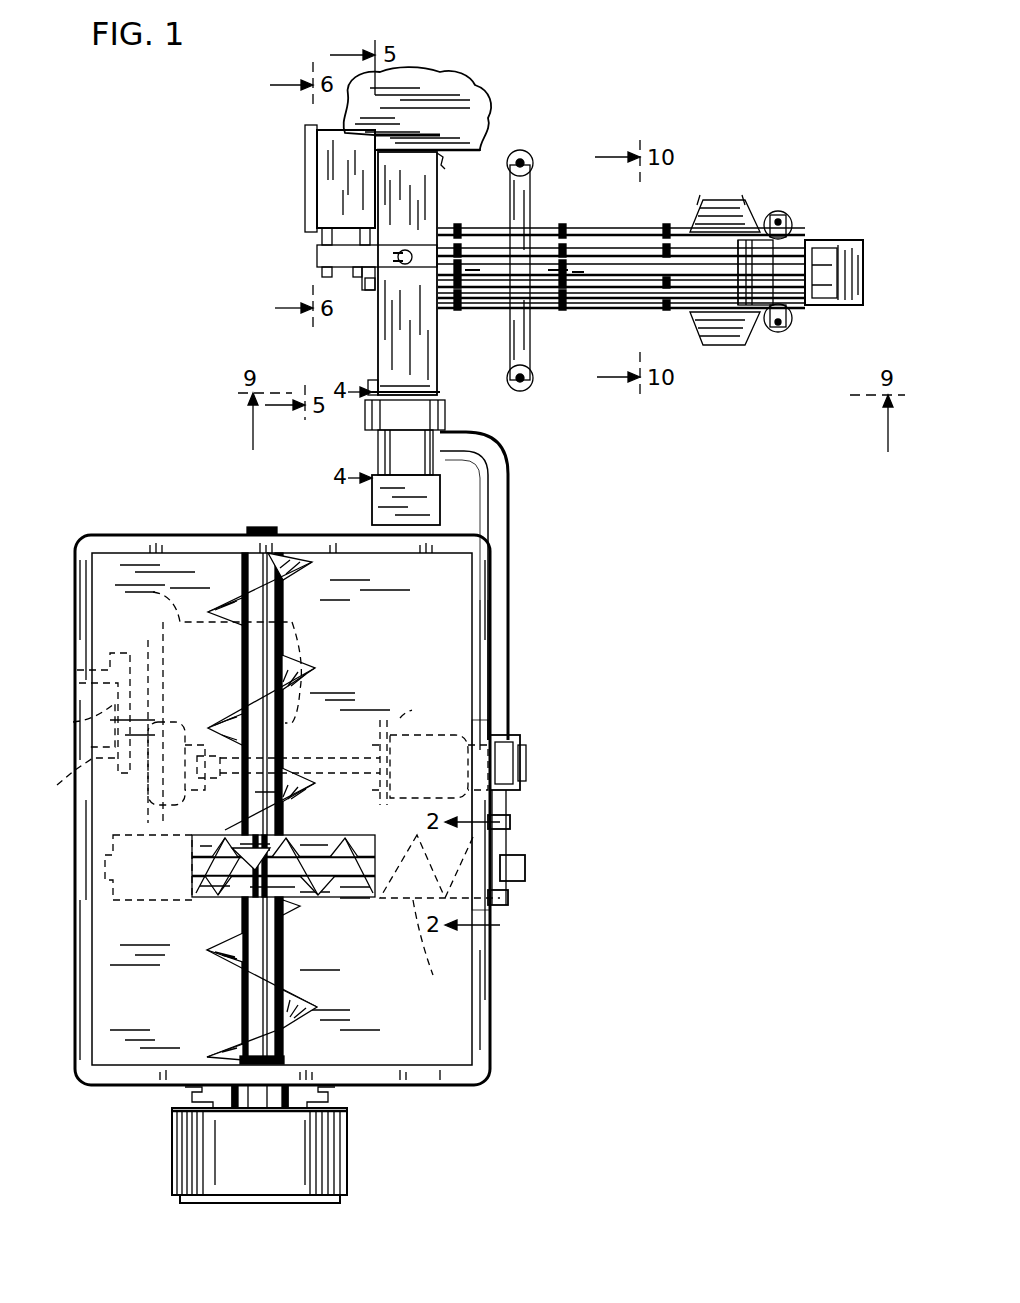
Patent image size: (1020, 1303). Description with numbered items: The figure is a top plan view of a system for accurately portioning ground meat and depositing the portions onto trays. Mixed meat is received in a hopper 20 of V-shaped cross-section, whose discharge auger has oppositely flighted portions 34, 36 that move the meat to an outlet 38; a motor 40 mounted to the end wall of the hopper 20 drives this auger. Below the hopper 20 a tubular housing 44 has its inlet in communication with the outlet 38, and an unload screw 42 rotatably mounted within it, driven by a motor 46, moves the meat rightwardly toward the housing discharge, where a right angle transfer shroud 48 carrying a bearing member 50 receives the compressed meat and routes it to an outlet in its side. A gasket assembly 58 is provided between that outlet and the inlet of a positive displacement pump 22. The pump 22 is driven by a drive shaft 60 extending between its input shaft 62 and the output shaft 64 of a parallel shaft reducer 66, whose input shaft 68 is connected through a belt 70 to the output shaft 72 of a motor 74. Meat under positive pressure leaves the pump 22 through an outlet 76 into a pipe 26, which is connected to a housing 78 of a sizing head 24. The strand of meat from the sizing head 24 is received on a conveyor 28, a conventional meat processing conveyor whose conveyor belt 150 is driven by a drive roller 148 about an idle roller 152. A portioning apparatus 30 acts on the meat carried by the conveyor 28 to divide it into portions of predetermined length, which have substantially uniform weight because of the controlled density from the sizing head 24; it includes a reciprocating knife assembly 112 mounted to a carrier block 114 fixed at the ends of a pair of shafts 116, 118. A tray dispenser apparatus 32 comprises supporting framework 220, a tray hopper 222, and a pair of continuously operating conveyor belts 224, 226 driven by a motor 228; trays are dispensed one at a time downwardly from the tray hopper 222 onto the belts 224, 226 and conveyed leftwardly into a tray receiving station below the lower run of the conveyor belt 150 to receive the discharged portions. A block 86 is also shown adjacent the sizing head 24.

The hopper 20 is at (530, 997).
The positive displacement pump 22 is at (552, 773).
The sizing head 24 is at (350, 440).
The pipe 26 is at (510, 572).
The conveyor 28 is at (352, 332).
The portioning apparatus 30 is at (290, 192).
The tray dispenser apparatus 32 is at (703, 170).
The oppositely flighted portion 34 is at (335, 655).
The oppositely flighted portion 36 is at (290, 960).
The outlet 38 is at (300, 835).
The motor 40 is at (347, 1152).
The unload screw 42 is at (332, 895).
The tubular housing 44 is at (440, 910).
The motor 46 is at (143, 905).
The right angle transfer shroud 48 is at (508, 895).
The bearing member 50 is at (525, 868).
The gasket assembly 58 is at (512, 822).
The drive shaft 60 is at (328, 753).
The input shaft 62 is at (439, 742).
The output shaft 64 is at (205, 782).
The parallel shaft reducer 66 is at (145, 797).
The input shaft 68 is at (75, 781).
The belt 70 is at (73, 722).
The output shaft 72 is at (77, 672).
The motor 74 is at (210, 700).
The outlet 76 is at (520, 728).
The housing 78 is at (470, 435).
The lower coupling block 86 is at (372, 504).
The reciprocating knife assembly 112 is at (410, 222).
The carrier block 114 is at (346, 281).
The shaft 116 is at (320, 244).
The shaft 118 is at (322, 258).
The drive roller 148 is at (445, 167).
The conveyor belt 150 is at (437, 348).
The idle roller 152 is at (437, 388).
The supporting framework 220 is at (530, 192).
The tray hopper 222 is at (750, 200).
The conveyor belt 224 is at (795, 248).
The conveyor belt 226 is at (798, 312).
The motor 228 is at (863, 255).